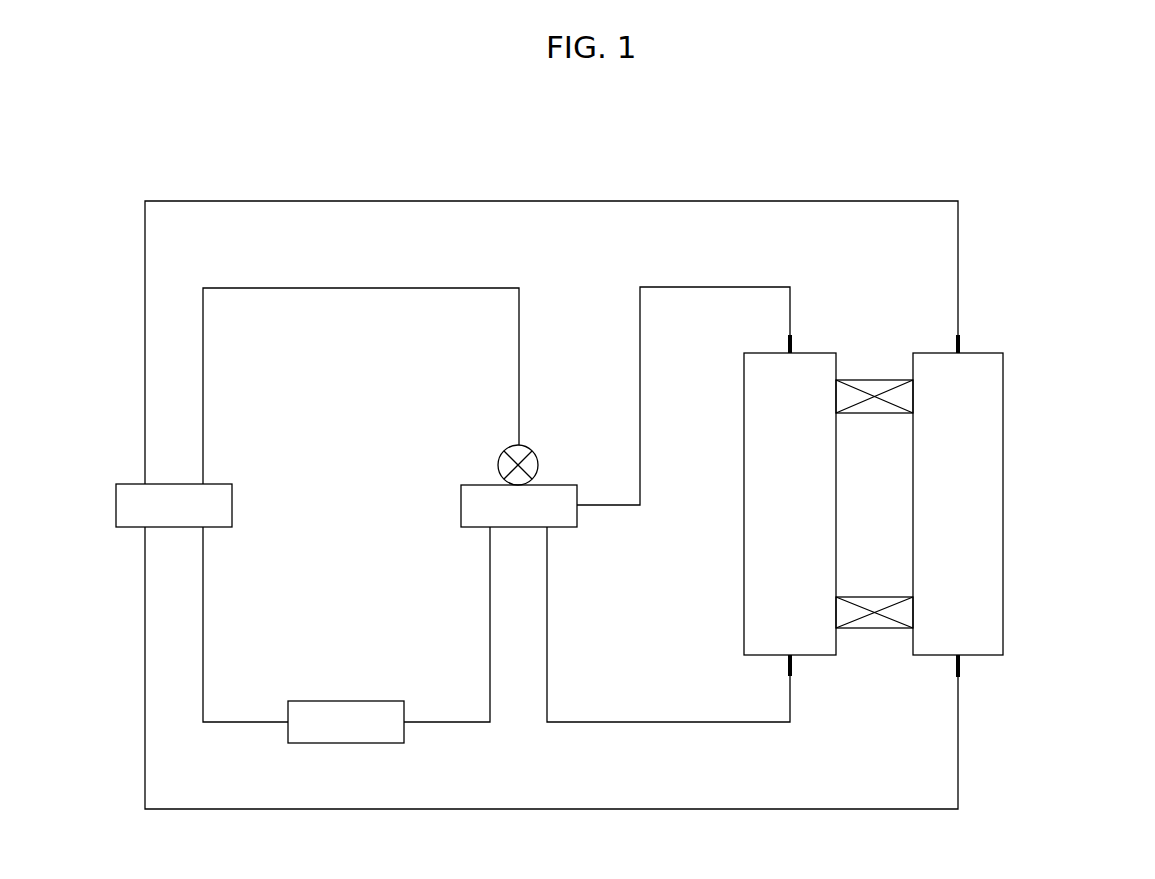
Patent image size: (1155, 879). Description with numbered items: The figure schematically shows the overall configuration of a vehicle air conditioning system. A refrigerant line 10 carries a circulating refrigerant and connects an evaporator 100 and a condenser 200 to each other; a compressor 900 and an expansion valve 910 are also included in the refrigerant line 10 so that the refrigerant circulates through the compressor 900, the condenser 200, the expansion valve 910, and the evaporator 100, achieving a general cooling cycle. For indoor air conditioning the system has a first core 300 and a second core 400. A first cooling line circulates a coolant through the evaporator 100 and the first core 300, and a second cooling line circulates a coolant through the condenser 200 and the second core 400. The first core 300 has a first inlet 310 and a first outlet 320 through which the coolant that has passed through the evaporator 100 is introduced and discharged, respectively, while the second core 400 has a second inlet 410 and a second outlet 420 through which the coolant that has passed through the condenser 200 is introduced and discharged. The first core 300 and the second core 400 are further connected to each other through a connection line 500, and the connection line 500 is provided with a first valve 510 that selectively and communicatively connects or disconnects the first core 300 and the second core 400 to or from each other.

The refrigerant line 10 is at (377, 288).
The evaporator 100 is at (519, 506).
The condenser 200 is at (174, 505).
The first core 300 is at (744, 543).
The first inlet 310 is at (790, 345).
The first outlet 320 is at (790, 665).
The second core 400 is at (1003, 503).
The second inlet 410 is at (962, 343).
The second outlet 420 is at (962, 665).
The connection line 500 is at (868, 380).
The first valve 510 is at (882, 413).
The compressor 900 is at (346, 722).
The expansion valve 910 is at (497, 462).